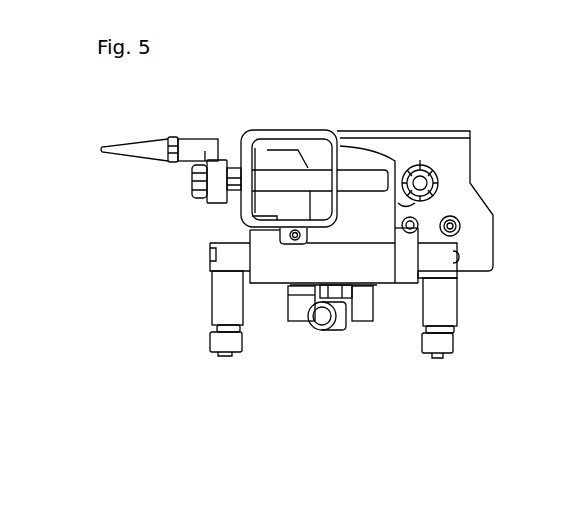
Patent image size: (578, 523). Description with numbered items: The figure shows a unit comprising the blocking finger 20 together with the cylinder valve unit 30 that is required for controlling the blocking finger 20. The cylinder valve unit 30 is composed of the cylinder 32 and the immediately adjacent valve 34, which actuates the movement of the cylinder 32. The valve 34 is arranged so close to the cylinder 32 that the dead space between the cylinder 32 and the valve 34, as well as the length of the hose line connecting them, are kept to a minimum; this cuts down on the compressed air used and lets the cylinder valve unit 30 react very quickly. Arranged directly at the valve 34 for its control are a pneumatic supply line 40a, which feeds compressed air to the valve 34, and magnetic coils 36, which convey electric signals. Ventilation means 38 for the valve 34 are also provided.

The blocking finger 20 is at (132, 137).
The cylinder valve unit 30 is at (460, 110).
The cylinder 32 is at (353, 148).
The valve 34 is at (290, 263).
The magnetic coils 36 is at (217, 283).
The ventilation means 38 is at (352, 305).
The pneumatic supply line 40a is at (322, 307).